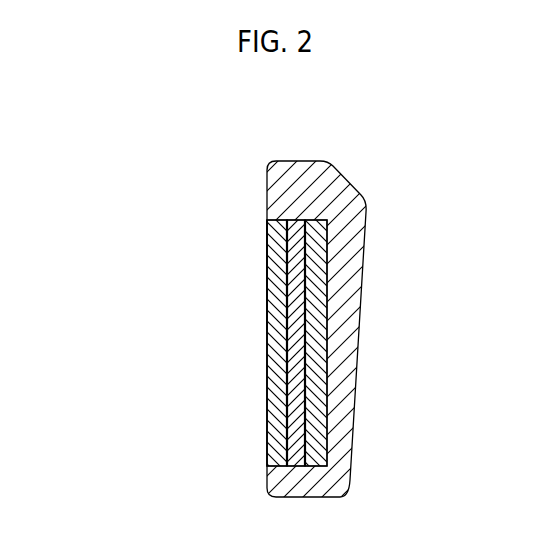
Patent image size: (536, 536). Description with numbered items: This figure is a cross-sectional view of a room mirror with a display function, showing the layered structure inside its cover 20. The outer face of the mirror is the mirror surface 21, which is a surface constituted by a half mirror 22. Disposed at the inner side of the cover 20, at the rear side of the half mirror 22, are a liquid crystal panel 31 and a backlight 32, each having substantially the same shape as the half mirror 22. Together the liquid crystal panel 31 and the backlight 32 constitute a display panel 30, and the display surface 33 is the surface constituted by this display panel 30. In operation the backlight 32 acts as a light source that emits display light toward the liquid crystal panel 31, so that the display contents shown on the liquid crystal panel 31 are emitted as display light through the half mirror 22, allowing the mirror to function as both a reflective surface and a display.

The cover 20 is at (351, 182).
The mirror surface 21 is at (267, 258).
The half mirror 22 is at (267, 300).
The display panel 30 is at (197, 341).
The liquid crystal panel 31 is at (295, 412).
The backlight 32 is at (313, 442).
The display surface 33 is at (277, 350).